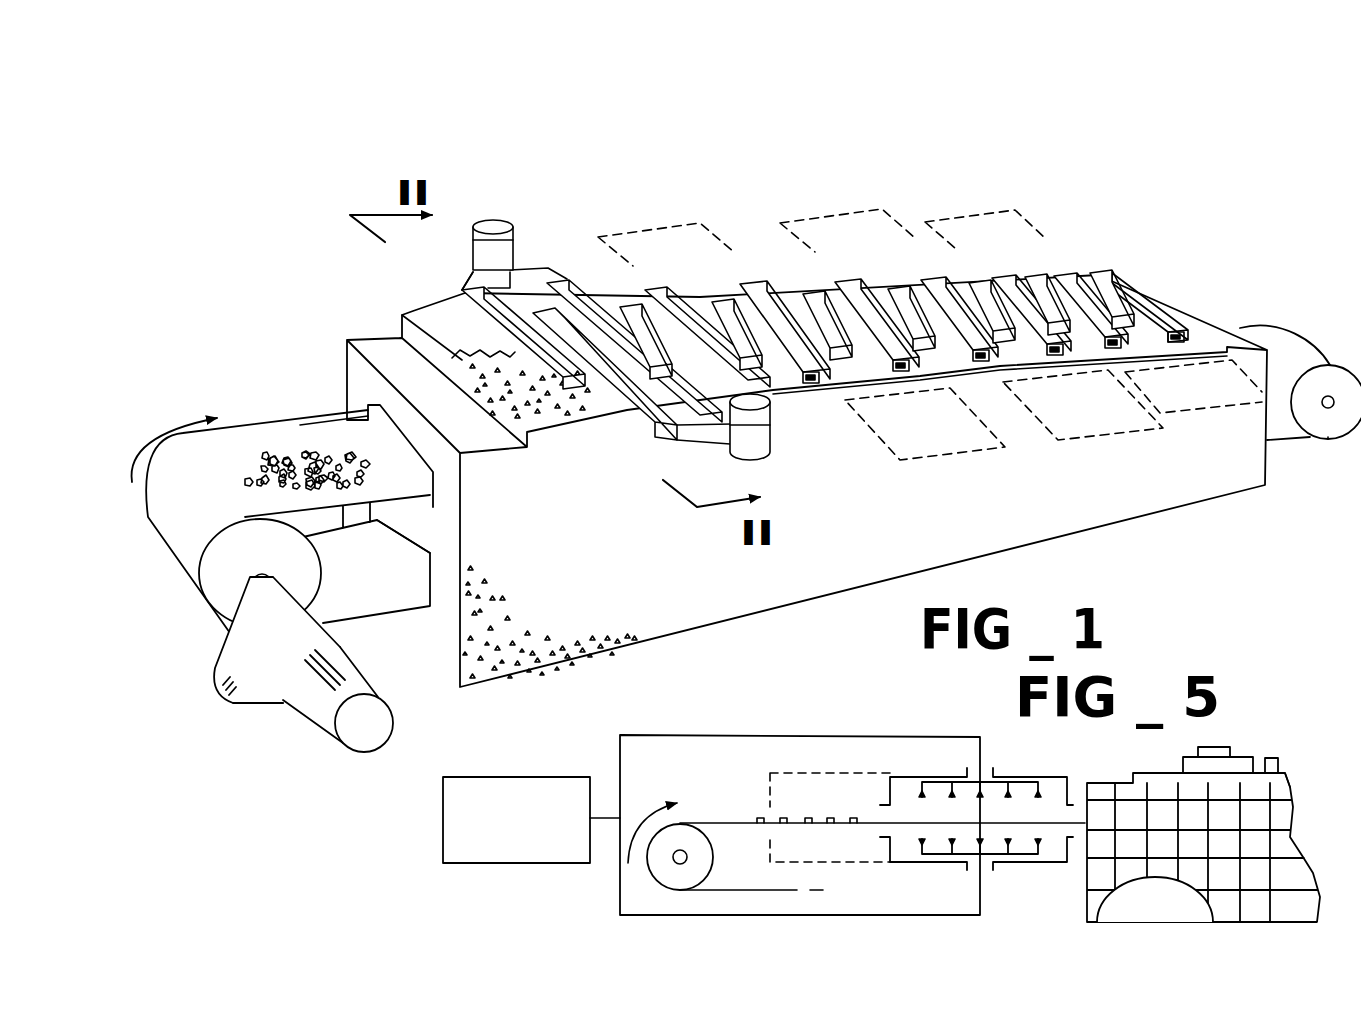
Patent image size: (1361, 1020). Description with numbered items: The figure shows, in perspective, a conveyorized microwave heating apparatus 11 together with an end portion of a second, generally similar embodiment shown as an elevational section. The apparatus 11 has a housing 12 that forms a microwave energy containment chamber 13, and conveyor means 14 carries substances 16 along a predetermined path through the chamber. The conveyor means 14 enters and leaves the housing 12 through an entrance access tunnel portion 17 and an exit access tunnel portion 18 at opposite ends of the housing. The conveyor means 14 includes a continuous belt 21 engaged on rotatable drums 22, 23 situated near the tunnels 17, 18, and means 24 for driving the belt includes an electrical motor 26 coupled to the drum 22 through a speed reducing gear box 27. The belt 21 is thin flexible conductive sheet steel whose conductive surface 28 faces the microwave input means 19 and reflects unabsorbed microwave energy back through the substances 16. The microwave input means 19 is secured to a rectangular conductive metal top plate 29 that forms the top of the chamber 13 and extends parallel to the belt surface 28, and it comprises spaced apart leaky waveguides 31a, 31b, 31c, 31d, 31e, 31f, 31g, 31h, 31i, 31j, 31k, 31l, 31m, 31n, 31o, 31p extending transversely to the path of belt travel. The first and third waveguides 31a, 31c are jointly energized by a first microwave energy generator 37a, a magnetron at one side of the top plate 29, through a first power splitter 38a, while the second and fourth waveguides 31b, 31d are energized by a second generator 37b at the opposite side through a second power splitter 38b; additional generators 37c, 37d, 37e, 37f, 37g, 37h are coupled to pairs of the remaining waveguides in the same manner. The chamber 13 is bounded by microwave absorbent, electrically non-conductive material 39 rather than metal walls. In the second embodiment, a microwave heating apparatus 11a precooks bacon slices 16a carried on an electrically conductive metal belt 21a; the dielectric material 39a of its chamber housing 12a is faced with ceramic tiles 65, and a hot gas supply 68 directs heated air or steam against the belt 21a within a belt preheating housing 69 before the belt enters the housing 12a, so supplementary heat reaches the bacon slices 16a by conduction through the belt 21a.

In FIG. 1, the conveyorized microwave heating apparatus 11 is at (230, 333).
In FIG. 1, the housing 12 is at (387, 323).
In FIG. 1, the microwave energy containment chamber 13 is at (513, 367).
In FIG. 1, the conveyor means 14 is at (193, 417).
In FIG. 1, the substances 16 is at (252, 467).
In FIG. 1, the entrance access tunnel portion 17 is at (425, 502).
In FIG. 1, the exit access tunnel portion 18 is at (1278, 360).
In FIG. 1, the microwave input means 19 is at (463, 283).
In FIG. 1, the continuous belt 21 is at (303, 423).
In FIG. 1, the rotatable drum 22 is at (268, 561).
In FIG. 1, the rotatable drum 23 is at (1325, 427).
In FIG. 1, the means for driving the conveyor belt 24 is at (247, 712).
In FIG. 1, the electrical motor 26 is at (380, 734).
In FIG. 1, the speed reducing gear box 27 is at (291, 646).
In FIG. 1, the conductive surface 28 is at (372, 457).
In FIG. 1, the top plate 29 is at (890, 378).
In FIG. 1, the first waveguide 31a is at (491, 323).
In FIG. 1, the second waveguide 31b is at (653, 417).
In FIG. 1, the third waveguide 31c is at (572, 305).
In FIG. 1, the fourth waveguide 31d is at (782, 392).
In FIG. 1, the additional waveguide 31e is at (653, 280).
In FIG. 1, the additional waveguide 31f is at (732, 307).
In FIG. 1, the additional waveguide 31g is at (753, 278).
In FIG. 1, the additional waveguide 31h is at (953, 373).
In FIG. 1, the additional waveguide 31i is at (845, 277).
In FIG. 1, the additional waveguide 31j is at (907, 290).
In FIG. 1, the additional waveguide 31k is at (920, 270).
In FIG. 1, the additional waveguide 31l is at (1005, 355).
In FIG. 1, the additional waveguide 31m is at (1077, 357).
In FIG. 1, the additional waveguide 31n is at (1053, 266).
In FIG. 1, the additional waveguide 31o is at (1068, 275).
In FIG. 1, the additional waveguide 31p is at (1112, 288).
In FIG. 1, the first microwave energy generator 37a is at (495, 223).
In FIG. 1, the second microwave energy generator 37b is at (733, 435).
In FIG. 1, the additional microwave generator 37c is at (640, 220).
In FIG. 1, the additional microwave generator 37d is at (960, 462).
In FIG. 1, the additional microwave generator 37e is at (817, 213).
In FIG. 1, the additional microwave generator 37f is at (1100, 427).
In FIG. 1, the additional microwave generator 37g is at (960, 205).
In FIG. 1, the additional microwave generator 37h is at (1222, 403).
In FIG. 1, the first power splitter 38a is at (522, 267).
In FIG. 1, the second power splitter 38b is at (743, 455).
In FIG. 1, the microwave absorbent electrically non-conductive material 39 is at (552, 630).
In FIG. 5, the microwave heating apparatus 11a is at (1027, 747).
In FIG. 5, the chamber housing 12a is at (1295, 787).
In FIG. 5, the bacon slices 16a is at (790, 818).
In FIG. 5, the electrically conductive metal belt 21a is at (718, 823).
In FIG. 5, the dielectric material 39a is at (1179, 909).
In FIG. 5, the ceramic tiles 65 is at (1097, 870).
In FIG. 5, the hot gas supply 68 is at (470, 863).
In FIG. 5, the belt preheating housing 69 is at (1043, 772).